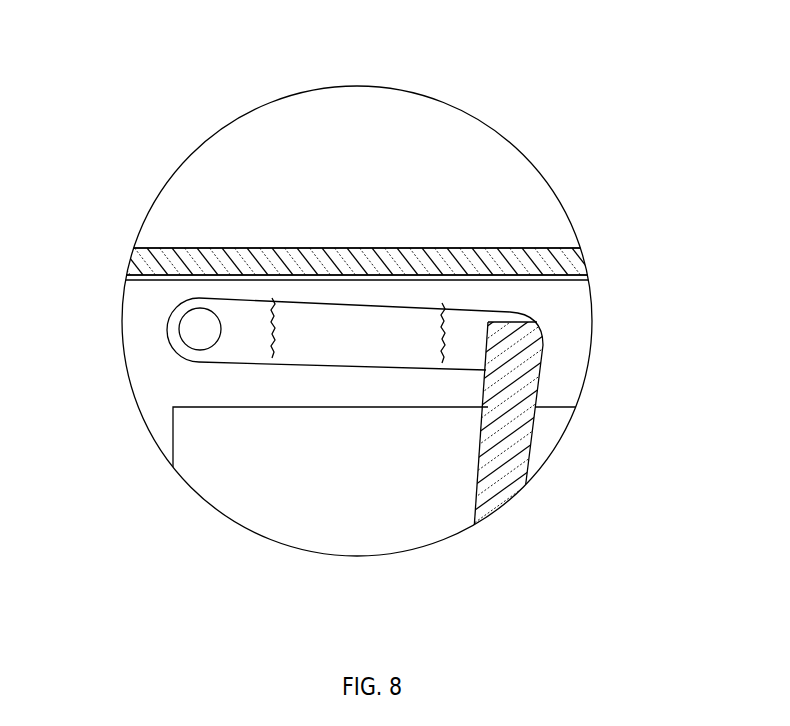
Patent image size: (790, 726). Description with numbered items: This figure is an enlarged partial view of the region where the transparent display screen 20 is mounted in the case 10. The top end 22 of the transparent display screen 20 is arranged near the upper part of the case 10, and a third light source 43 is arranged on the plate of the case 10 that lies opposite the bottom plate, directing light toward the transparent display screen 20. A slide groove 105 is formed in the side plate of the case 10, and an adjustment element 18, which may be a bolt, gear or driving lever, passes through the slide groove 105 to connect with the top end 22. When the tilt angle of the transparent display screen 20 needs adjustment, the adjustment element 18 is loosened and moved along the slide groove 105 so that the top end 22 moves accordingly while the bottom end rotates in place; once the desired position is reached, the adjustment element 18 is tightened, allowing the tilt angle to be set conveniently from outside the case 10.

The case 10 is at (162, 380).
The adjustment element 18 is at (458, 345).
The transparent display screen 20 is at (503, 467).
The top end 22 is at (517, 350).
The third light source 43 is at (523, 262).
The slide groove 105 is at (365, 303).